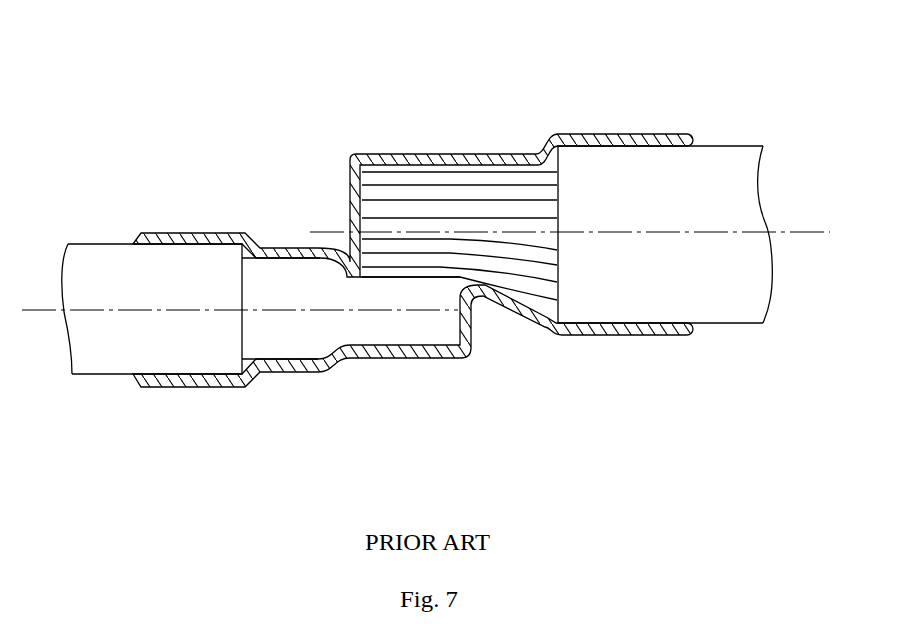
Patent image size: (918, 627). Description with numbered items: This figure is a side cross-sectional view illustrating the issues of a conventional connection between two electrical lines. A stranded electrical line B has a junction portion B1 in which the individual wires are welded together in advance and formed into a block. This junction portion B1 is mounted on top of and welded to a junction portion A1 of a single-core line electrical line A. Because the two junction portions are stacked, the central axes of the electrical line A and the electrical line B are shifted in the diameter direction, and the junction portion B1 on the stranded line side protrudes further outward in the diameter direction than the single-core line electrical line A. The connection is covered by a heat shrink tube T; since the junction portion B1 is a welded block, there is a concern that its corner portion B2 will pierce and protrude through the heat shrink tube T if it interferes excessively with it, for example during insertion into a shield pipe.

The single-core line electrical line A is at (83, 260).
The junction portion of the single-core line electrical line A1 is at (383, 320).
The stranded electrical line B is at (742, 157).
The junction portion of the stranded electrical line B1 is at (393, 185).
The corner portion B2 is at (360, 157).
The heat shrink tube T is at (413, 200).